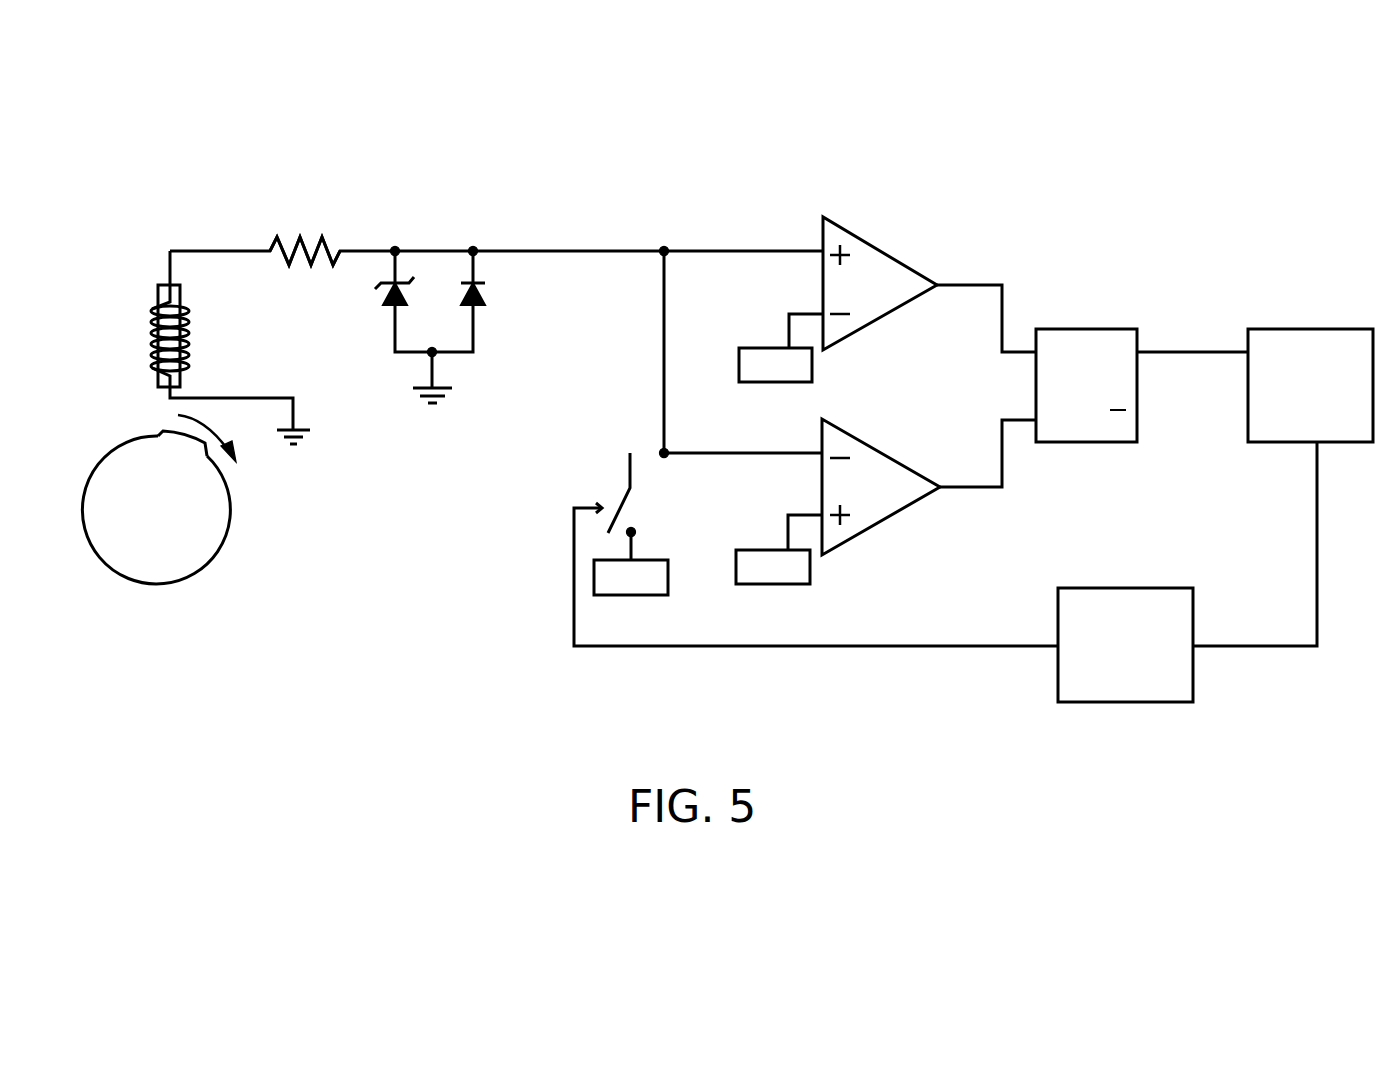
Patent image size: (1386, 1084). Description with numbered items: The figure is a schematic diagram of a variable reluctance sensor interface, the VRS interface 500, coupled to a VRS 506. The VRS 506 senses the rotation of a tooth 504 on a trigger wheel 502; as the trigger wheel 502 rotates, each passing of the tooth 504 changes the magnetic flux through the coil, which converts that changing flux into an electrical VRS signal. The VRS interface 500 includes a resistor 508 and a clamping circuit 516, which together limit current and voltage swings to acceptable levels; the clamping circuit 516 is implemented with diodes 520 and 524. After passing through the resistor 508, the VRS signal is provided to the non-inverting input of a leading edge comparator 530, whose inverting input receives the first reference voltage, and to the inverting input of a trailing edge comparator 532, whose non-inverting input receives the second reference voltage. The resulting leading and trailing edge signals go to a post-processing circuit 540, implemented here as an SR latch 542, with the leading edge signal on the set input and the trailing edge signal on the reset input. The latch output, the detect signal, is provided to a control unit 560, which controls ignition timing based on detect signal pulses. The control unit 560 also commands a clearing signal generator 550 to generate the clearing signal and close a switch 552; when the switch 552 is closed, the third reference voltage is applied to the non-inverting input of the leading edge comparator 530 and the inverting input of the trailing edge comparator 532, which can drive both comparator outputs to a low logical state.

The VRS interface 500 is at (744, 716).
The trigger wheel 502 is at (230, 513).
The tooth 504 is at (163, 432).
The VRS 506 is at (152, 306).
The resistor 508 is at (297, 236).
The clamping circuit 516 is at (431, 231).
The diode 520 is at (385, 303).
The diode 524 is at (483, 305).
The leading edge comparator 530 is at (865, 234).
The trailing edge comparator 532 is at (858, 432).
The post-processing circuit 540 is at (1076, 282).
The SR latch 542 is at (1063, 327).
The clearing signal generator 550 is at (1095, 587).
The switch 552 is at (591, 489).
The control unit 560 is at (1315, 327).